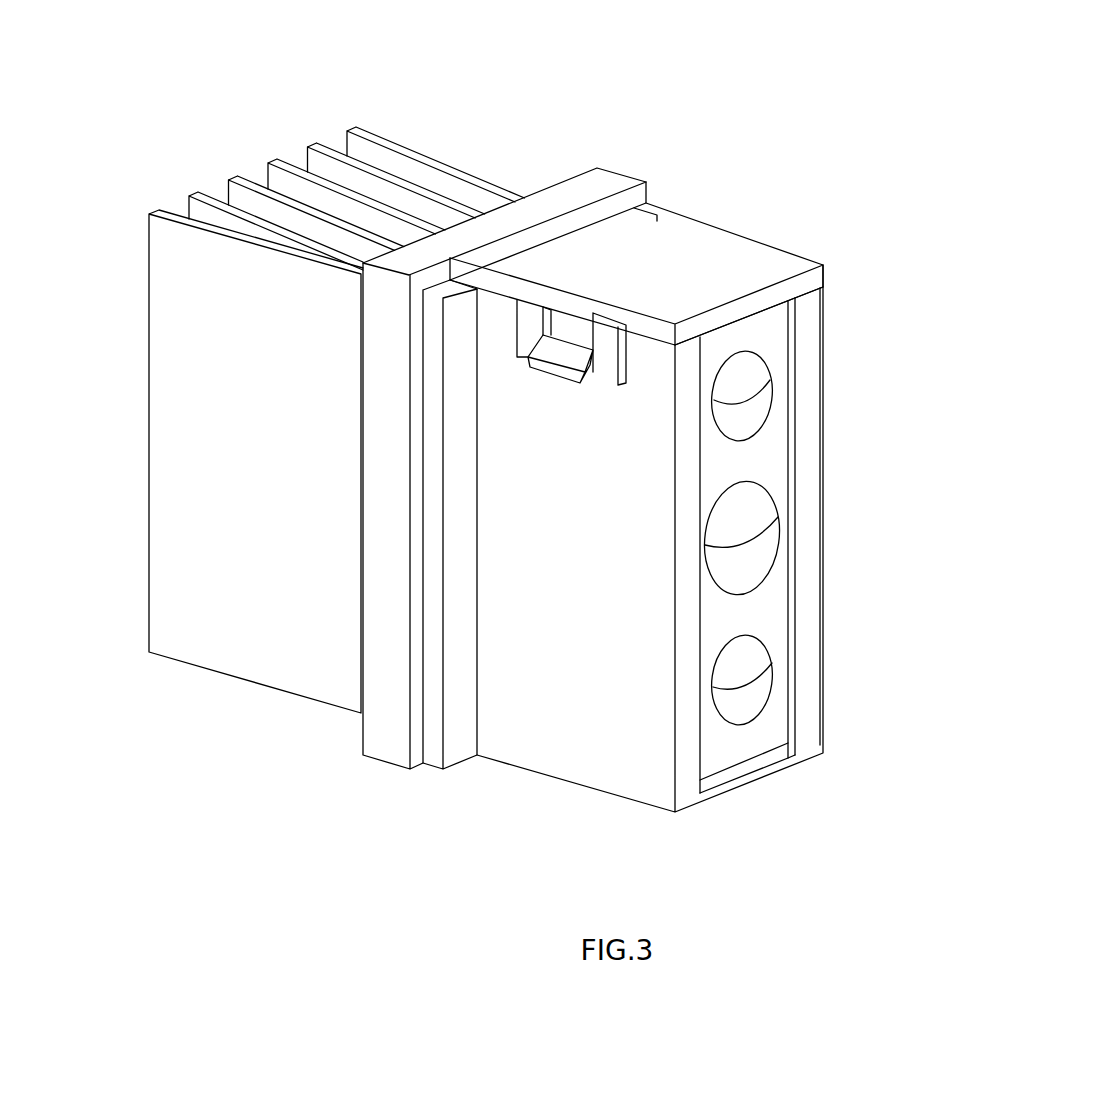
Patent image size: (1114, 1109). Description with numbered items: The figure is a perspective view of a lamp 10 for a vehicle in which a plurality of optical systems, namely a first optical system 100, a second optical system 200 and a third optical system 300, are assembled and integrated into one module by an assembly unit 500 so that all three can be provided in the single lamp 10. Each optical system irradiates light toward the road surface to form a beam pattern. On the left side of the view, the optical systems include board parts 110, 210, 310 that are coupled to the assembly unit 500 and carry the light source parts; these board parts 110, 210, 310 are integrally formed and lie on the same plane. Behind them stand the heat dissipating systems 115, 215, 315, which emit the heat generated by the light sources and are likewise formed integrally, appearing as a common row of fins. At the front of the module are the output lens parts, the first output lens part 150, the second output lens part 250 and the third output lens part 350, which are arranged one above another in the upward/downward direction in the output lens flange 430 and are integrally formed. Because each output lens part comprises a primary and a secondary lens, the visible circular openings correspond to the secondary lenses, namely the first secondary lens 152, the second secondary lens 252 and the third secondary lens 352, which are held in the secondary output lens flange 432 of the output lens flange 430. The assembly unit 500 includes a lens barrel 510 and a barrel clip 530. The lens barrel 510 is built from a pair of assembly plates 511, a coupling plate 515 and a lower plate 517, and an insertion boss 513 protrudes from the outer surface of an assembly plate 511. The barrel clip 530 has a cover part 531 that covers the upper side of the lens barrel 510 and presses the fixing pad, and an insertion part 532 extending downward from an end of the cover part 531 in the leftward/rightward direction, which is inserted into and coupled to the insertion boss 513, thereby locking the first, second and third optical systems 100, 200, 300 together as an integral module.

The lamp for a vehicle 10 is at (232, 64).
The first optical system 100 is at (1003, 695).
The board part 110 is at (603, 182).
The heat dissipating system 115 is at (397, 188).
The first output lens part 150 is at (898, 692).
The (1-2)-th lens 152 is at (748, 695).
The second optical system 200 is at (1003, 555).
The board part 210 is at (548, 177).
The heat dissipating system 215 is at (356, 156).
The second output lens part 250 is at (898, 551).
The (2-2)-th lens 252 is at (748, 550).
The third optical system 300 is at (1003, 415).
The board part 310 is at (653, 148).
The heat dissipating system 315 is at (416, 148).
The third output lens part 350 is at (898, 411).
The (3-2)-th lens 352 is at (750, 410).
The output lens flange 430 is at (912, 220).
The secondary output lens flange 432 is at (750, 333).
The assembly unit 500 is at (250, 833).
The lens barrel 510 is at (898, 740).
The assembly plate 511 is at (808, 740).
The insertion boss 513 is at (562, 355).
The coupling plate 515 is at (458, 753).
The lower plate 517 is at (748, 778).
The barrel clip 530 is at (780, 143).
The cover part 531 is at (723, 263).
The insertion part 532 is at (605, 343).